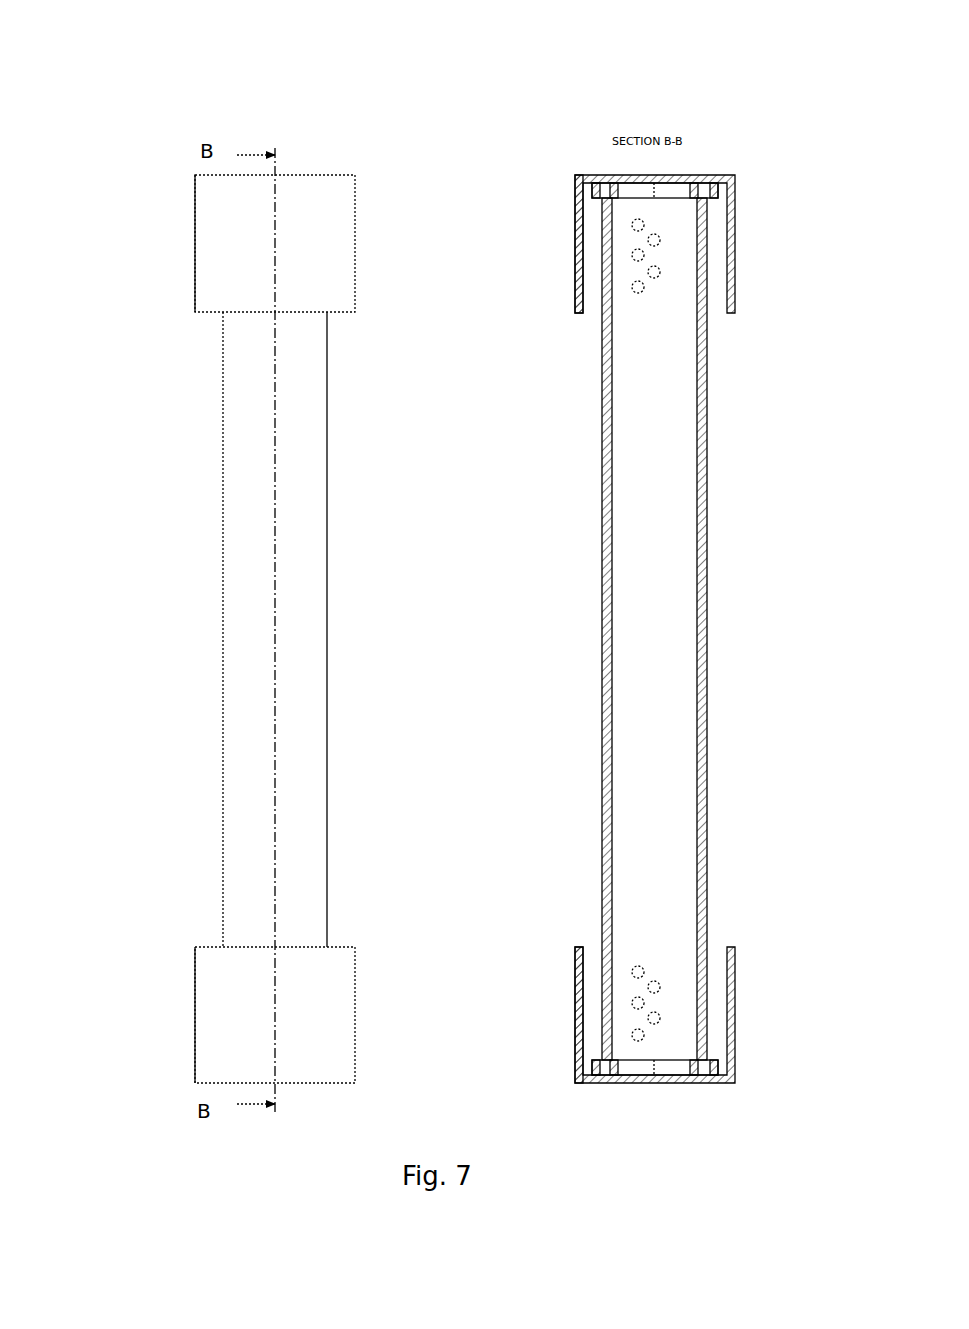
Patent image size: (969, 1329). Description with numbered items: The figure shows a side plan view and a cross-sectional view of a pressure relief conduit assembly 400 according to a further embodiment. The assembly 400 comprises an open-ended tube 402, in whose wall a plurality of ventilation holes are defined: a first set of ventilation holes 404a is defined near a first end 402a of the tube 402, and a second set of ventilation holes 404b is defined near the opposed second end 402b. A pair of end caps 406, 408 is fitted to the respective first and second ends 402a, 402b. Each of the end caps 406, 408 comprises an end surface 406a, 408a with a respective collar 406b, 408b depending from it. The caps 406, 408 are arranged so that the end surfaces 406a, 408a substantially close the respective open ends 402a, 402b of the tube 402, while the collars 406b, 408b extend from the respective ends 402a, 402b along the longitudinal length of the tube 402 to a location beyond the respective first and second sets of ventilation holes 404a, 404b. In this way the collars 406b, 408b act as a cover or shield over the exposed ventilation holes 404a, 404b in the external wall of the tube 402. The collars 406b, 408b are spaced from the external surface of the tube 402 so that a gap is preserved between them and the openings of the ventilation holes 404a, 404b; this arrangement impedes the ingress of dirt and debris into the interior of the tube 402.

The pressure relief conduit assembly 400 is at (164, 122).
The open-ended tube 402 is at (245, 485).
The first end of the tube 402a is at (180, 222).
The second end of the tube 402b is at (162, 1087).
The first set of ventilation holes 404a is at (681, 293).
The second set of ventilation holes 404b is at (679, 973).
The end cap 406 is at (290, 200).
The end surface 406a is at (600, 185).
The collar 406b is at (577, 275).
The end cap 408 is at (312, 1053).
The end surface 408a is at (603, 1085).
The collar 408b is at (576, 958).